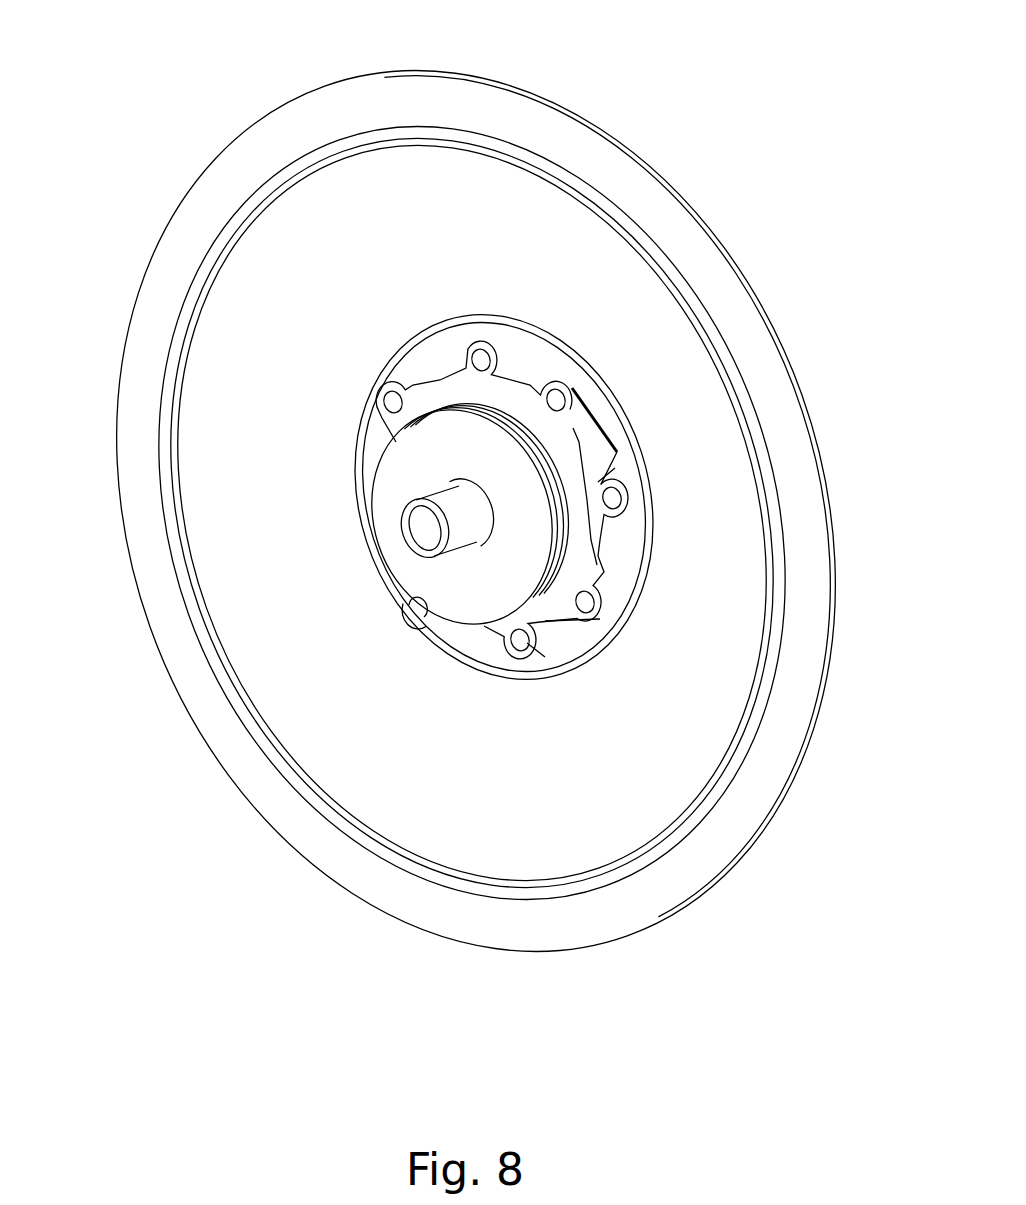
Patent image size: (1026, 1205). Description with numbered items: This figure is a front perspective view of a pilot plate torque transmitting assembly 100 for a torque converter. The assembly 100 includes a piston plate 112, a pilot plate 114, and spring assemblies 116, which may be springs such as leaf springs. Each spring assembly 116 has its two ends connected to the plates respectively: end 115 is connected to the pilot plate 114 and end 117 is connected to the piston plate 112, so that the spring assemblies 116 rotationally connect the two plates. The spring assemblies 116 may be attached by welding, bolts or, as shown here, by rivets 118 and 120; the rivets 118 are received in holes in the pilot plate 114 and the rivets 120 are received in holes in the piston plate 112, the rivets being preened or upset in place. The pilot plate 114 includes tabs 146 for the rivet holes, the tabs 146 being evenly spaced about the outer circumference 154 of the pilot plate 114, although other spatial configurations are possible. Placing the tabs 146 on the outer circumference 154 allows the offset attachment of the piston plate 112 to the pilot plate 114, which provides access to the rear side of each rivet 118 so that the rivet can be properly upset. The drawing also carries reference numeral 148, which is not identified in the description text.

The pilot plate torque transmitting assembly 100 is at (128, 124).
The piston plate 112 is at (470, 183).
The pilot plate 114 is at (402, 482).
The end 115 is at (600, 620).
The spring assemblies 116 is at (448, 370).
The end 117 is at (533, 653).
The rivets 118 is at (392, 398).
The rivets 120 is at (477, 357).
The tabs 146 is at (412, 380).
The tire 148 is at (357, 867).
The outer circumference 154 is at (547, 472).